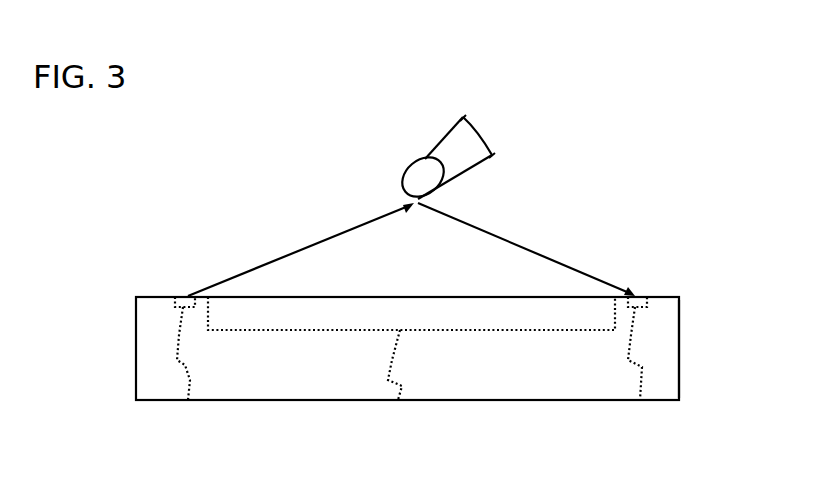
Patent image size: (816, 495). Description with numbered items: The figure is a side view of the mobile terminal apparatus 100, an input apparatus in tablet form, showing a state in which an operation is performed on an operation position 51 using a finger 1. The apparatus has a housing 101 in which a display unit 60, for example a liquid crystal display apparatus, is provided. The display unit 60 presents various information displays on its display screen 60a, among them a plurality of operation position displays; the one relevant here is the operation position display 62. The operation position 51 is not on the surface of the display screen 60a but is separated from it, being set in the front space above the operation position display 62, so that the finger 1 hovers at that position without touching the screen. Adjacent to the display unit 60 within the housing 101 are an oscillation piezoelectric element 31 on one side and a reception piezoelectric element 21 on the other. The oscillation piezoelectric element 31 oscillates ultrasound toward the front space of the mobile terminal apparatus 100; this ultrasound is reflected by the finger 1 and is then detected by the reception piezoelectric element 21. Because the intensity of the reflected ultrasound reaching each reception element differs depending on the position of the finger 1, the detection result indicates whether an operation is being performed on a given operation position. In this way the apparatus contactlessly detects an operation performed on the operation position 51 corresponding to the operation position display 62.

The finger 1 is at (440, 142).
The operation position 51 is at (404, 202).
The operation position display 62 is at (355, 282).
The display screen 60a is at (485, 297).
The display unit 60 is at (398, 400).
The mobile terminal apparatus 100 is at (119, 333).
The housing 101 is at (680, 348).
The oscillation piezoelectric element 31 is at (188, 400).
The reception piezoelectric elements 21 is at (640, 400).